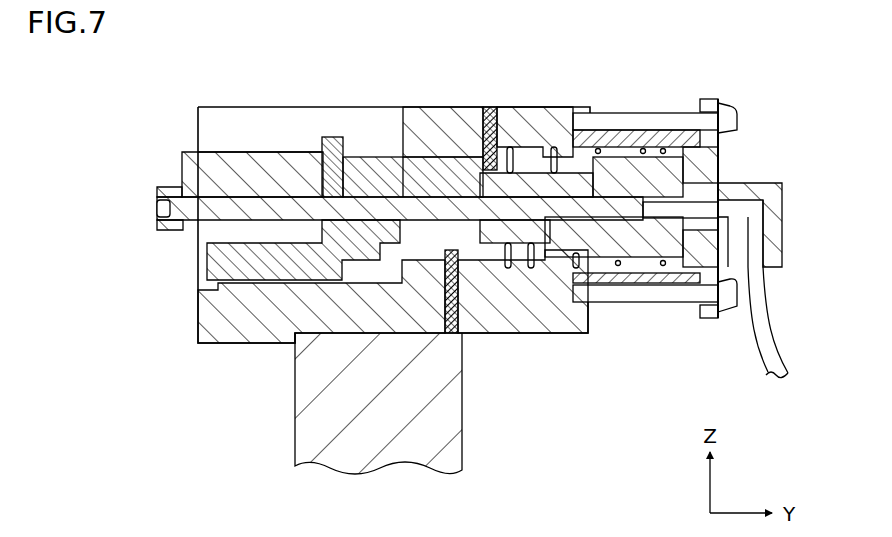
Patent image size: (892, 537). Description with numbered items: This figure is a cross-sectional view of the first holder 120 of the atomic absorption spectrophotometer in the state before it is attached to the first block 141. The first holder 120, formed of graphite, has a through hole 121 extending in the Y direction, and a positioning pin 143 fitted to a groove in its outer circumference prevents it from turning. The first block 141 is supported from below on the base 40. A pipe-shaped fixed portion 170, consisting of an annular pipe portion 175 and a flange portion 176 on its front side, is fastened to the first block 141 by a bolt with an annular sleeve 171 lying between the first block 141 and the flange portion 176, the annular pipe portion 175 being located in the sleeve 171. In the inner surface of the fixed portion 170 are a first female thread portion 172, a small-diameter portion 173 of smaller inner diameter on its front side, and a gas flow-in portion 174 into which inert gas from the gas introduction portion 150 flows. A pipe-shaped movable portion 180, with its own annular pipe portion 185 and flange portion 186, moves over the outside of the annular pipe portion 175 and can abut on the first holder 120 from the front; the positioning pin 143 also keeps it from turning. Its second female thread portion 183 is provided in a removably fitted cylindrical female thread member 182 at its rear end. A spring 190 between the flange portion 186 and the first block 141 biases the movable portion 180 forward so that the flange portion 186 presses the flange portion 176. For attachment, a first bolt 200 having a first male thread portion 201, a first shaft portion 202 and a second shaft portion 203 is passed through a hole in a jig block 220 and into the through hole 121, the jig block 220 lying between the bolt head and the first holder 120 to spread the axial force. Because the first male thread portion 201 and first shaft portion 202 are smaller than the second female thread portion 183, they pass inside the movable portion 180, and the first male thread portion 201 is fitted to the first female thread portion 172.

The base 40 is at (317, 396).
The first holder 120 is at (220, 265).
The through hole 121 is at (376, 196).
The first block 141 is at (560, 320).
The positioning pin 143 is at (493, 130).
The gas introduction portion 150 is at (770, 207).
The fixed portion 170 is at (700, 157).
The sleeve 171 is at (668, 283).
The first female thread portion 172 is at (597, 153).
The small-diameter portion 173 is at (699, 302).
The gas flow-in portion 174 is at (694, 204).
The annular pipe portion 175 is at (655, 177).
The flange portion 176 is at (722, 158).
The movable portion 180 is at (618, 266).
The female thread member 182 is at (530, 269).
The second female thread portion 183 is at (484, 200).
The annular pipe portion 185 is at (627, 154).
The flange portion 186 is at (679, 144).
The spring 190 is at (512, 146).
The first bolt 200 is at (203, 207).
The first male thread portion 201 is at (536, 192).
The first shaft portion 202 is at (424, 195).
The second shaft portion 203 is at (302, 193).
The jig block 220 is at (240, 170).